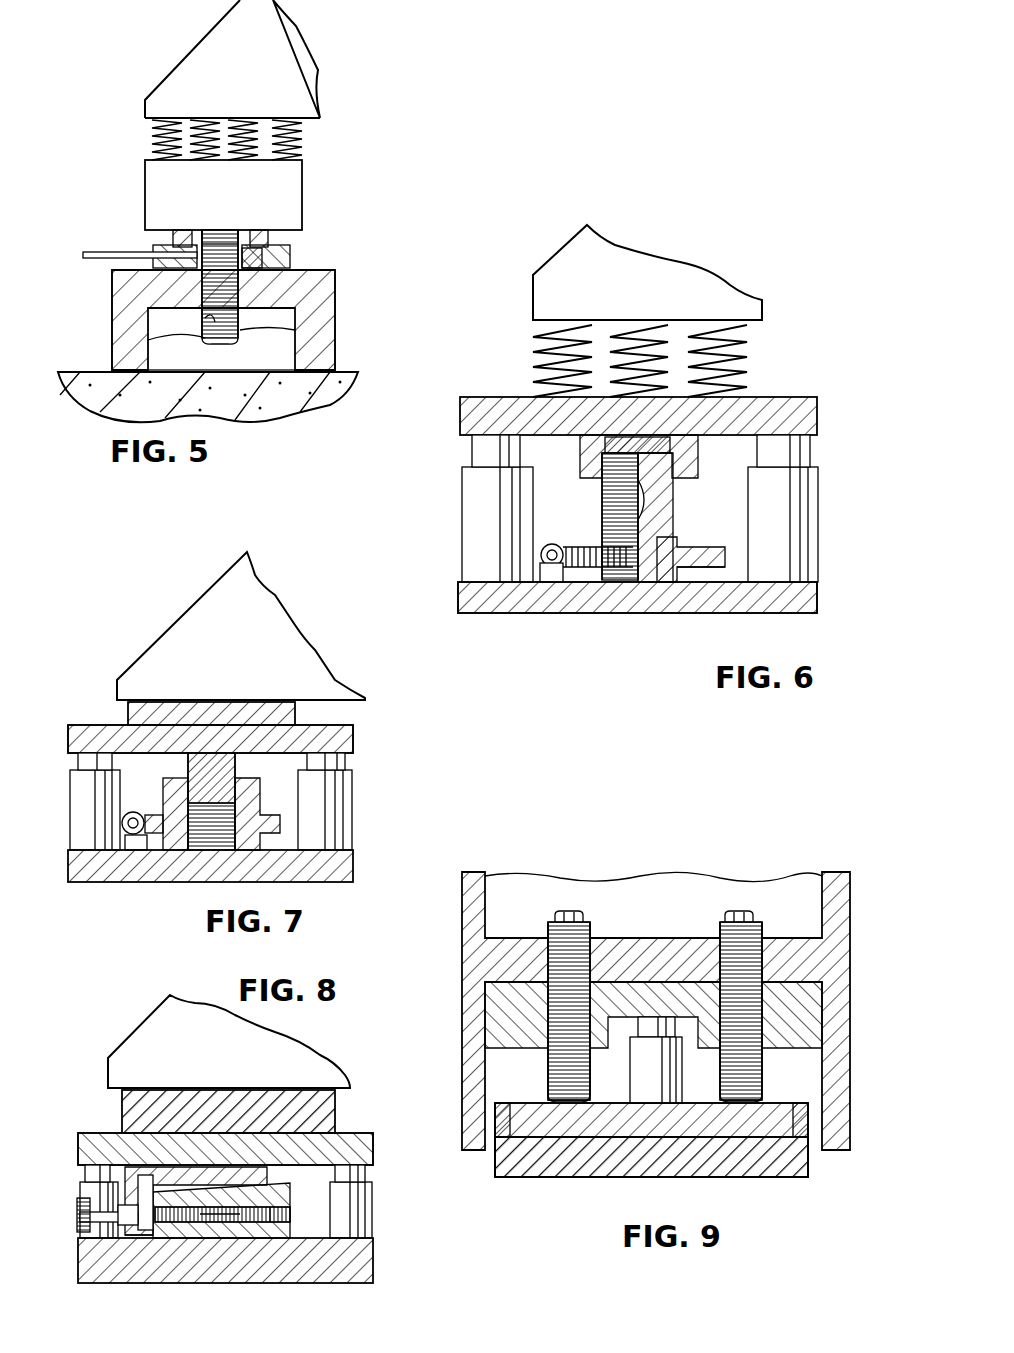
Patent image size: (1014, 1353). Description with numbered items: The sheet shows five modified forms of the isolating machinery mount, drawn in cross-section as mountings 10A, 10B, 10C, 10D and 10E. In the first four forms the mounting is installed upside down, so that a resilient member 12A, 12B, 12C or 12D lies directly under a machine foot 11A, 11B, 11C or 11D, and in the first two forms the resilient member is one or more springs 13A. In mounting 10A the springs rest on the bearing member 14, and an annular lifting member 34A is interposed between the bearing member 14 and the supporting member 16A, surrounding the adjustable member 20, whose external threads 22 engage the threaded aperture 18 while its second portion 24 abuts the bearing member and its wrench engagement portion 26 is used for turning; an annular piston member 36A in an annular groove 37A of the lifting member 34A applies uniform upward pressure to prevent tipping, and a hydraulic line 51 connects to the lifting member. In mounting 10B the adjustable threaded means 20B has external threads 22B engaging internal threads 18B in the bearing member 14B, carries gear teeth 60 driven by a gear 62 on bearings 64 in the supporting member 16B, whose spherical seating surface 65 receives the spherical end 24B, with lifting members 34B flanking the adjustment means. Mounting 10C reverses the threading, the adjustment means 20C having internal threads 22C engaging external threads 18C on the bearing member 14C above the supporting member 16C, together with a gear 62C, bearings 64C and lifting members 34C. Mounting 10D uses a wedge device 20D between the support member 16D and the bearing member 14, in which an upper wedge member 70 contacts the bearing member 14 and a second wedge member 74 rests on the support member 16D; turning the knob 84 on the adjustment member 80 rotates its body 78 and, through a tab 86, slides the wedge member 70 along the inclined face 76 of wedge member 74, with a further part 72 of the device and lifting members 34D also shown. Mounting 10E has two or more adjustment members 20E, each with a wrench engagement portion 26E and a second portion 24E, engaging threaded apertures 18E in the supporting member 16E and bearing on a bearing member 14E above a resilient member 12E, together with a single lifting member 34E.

In FIG. 5, the mounting 10A is at (300, 224).
In FIG. 6, the mounting 10B is at (472, 452).
In FIG. 7, the mounting 10C is at (102, 680).
In FIG. 8, the mounting 10D is at (62, 1085).
In FIG. 9, the mounting 10E is at (858, 920).
In FIG. 5, the machine foot 11A is at (320, 86).
In FIG. 6, the machine foot 11B is at (698, 275).
In FIG. 7, the machine foot 11C is at (220, 585).
In FIG. 8, the machine foot 11D is at (280, 1042).
In FIG. 5, the resilient member 12A is at (150, 135).
In FIG. 6, the resilient member 12B is at (748, 345).
In FIG. 7, the resilient member 12C is at (297, 712).
In FIG. 8, the resilient member 12D is at (338, 1112).
In FIG. 9, the resilient cushion member 12E is at (785, 1178).
In FIG. 5, the springs 13A is at (300, 140).
In FIG. 6, the springs 13A is at (535, 350).
In FIG. 5, the bearing member 14 is at (148, 182).
In FIG. 8, the bearing member 14 is at (373, 1158).
In FIG. 6, the bearing member 14B is at (778, 397).
In FIG. 7, the upper plate 14C is at (355, 745).
In FIG. 9, the bearing member 14E is at (648, 1128).
In FIG. 5, the supporting member 16A is at (120, 287).
In FIG. 6, the supporting member 16B is at (817, 596).
In FIG. 7, the base 16C is at (355, 860).
In FIG. 8, the support member 16D is at (373, 1270).
In FIG. 9, the supporting member 16E is at (850, 990).
In FIG. 5, the threaded aperture 18 is at (205, 313).
In FIG. 6, the internal threads 18B is at (700, 445).
In FIG. 7, the external threads 18C is at (160, 760).
In FIG. 9, the threaded aperture 18E is at (550, 1010).
In FIG. 5, the adjustable member 20 is at (148, 340).
In FIG. 6, the adjustable threaded means 20B is at (605, 498).
In FIG. 7, the adjustment means 20C is at (262, 798).
In FIG. 8, the wedge device 20D is at (240, 1250).
In FIG. 9, the adjustment members 20E is at (590, 925).
In FIG. 5, the external threads 22 is at (240, 290).
In FIG. 6, the external threads 22B is at (655, 500).
In FIG. 7, the internal threads 22C is at (195, 855).
In FIG. 5, the second portion 24 is at (222, 230).
In FIG. 6, the spherical end 24B is at (668, 540).
In FIG. 9, the second portion 24E is at (565, 1110).
In FIG. 5, the wrench engagement portion 26 is at (296, 330).
In FIG. 9, the wrench engagement portion 26E is at (570, 912).
In FIG. 5, the annular lifting member 34A is at (292, 253).
In FIG. 6, the guide post 34B is at (463, 525).
In FIG. 7, the guide post 34C is at (72, 780).
In FIG. 8, the guide post 34D is at (82, 1195).
In FIG. 9, the lifting member 34E is at (630, 1088).
In FIG. 5, the annular piston member 36A is at (270, 236).
In FIG. 5, the annular groove 37A is at (292, 262).
In FIG. 5, the hydraulic line 51 is at (100, 250).
In FIG. 6, the gear teeth 60 is at (710, 568).
In FIG. 6, the gear 62 is at (540, 555).
In FIG. 6, the bearings 64 is at (551, 575).
In FIG. 6, the spherical seating surface 65 is at (635, 580).
In FIG. 7, the ring 62C is at (121, 822).
In FIG. 7, the pin 64C is at (133, 848).
In FIG. 8, the wedge member 70 is at (85, 1165).
In FIG. 8, the bar 72 is at (148, 1232).
In FIG. 8, the second wedge member 74 is at (272, 1224).
In FIG. 8, the inclined face 76 is at (290, 1190).
In FIG. 8, the body 78 is at (290, 1218).
In FIG. 8, the adjustment member 80 is at (125, 1225).
In FIG. 8, the knob 84 is at (77, 1225).
In FIG. 8, the tab 86 is at (140, 1238).